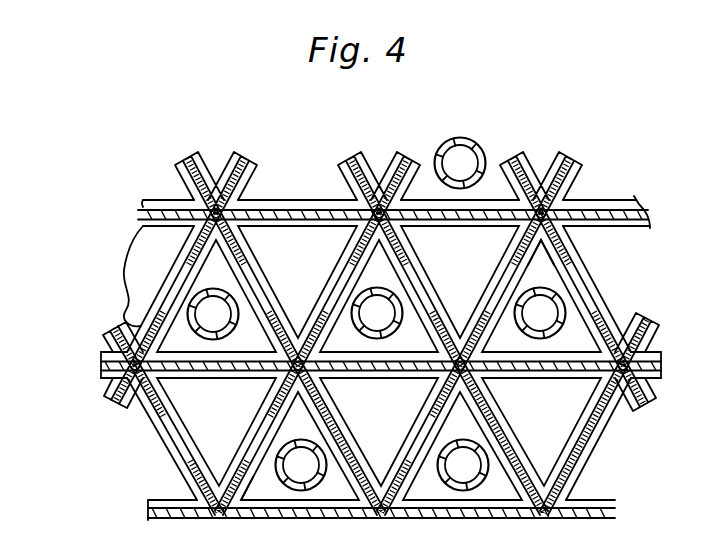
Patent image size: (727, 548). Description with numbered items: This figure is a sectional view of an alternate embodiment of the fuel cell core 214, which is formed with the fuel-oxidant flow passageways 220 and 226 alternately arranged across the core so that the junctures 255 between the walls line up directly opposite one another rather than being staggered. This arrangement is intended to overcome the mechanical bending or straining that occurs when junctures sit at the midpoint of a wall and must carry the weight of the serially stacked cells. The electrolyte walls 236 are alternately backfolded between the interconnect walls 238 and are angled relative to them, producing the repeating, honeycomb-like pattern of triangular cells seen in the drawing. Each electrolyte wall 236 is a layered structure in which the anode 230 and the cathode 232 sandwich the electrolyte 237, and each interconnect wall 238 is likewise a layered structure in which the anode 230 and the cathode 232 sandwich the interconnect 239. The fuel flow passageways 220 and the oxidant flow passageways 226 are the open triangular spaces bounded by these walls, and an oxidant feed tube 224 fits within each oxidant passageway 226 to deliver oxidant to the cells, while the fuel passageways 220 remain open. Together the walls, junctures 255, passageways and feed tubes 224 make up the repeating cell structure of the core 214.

The core 214 is at (115, 268).
The fuel flow passageway 220 is at (467, 280).
The oxidant feed tube 224 is at (434, 137).
The oxidant flow passageway 226 is at (537, 262).
The anode 230 is at (310, 219).
The cathode 232 is at (167, 453).
The electrolyte wall 236 is at (146, 418).
The electrolyte 237 is at (586, 275).
The interconnect wall 238 is at (323, 224).
The interconnect 239 is at (313, 193).
The juncture 255 is at (515, 216).